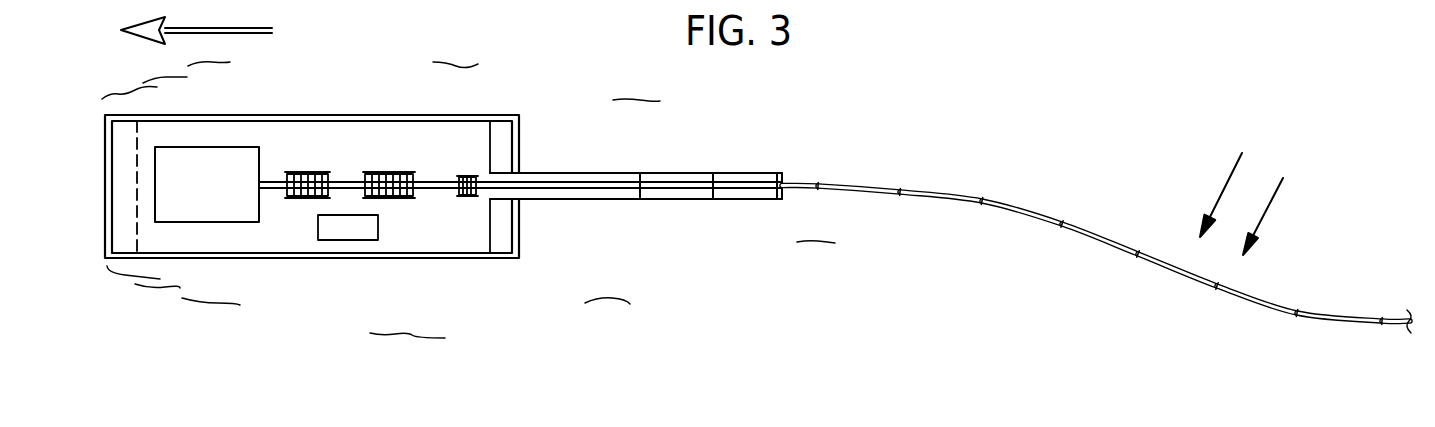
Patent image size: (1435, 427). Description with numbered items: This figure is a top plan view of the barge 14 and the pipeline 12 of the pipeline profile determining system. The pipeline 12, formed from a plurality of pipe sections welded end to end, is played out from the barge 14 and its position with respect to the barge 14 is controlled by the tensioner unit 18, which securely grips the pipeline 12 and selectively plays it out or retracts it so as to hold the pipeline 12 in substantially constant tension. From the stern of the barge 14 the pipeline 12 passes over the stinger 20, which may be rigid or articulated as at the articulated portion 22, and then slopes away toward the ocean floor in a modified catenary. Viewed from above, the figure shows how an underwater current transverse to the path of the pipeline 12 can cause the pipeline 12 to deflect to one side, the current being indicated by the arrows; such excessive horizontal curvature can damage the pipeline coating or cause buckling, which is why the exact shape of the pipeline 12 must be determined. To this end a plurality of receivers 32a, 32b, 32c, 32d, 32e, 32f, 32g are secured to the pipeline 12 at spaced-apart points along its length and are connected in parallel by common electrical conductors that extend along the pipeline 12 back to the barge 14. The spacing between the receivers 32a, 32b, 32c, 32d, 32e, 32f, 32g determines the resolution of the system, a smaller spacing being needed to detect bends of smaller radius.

The pipeline 12 is at (1096, 245).
The barge 14 is at (447, 243).
The tensioner unit 18 is at (353, 116).
The stinger 20 is at (597, 199).
The articulated portion 22 is at (713, 173).
The receiver 32a is at (826, 172).
The receiver 32b is at (900, 188).
The receiver 32c is at (983, 197).
The receiver 32d is at (1071, 211).
The receiver 32e is at (1139, 250).
The receiver 32f is at (1225, 273).
The receiver 32g is at (1298, 309).